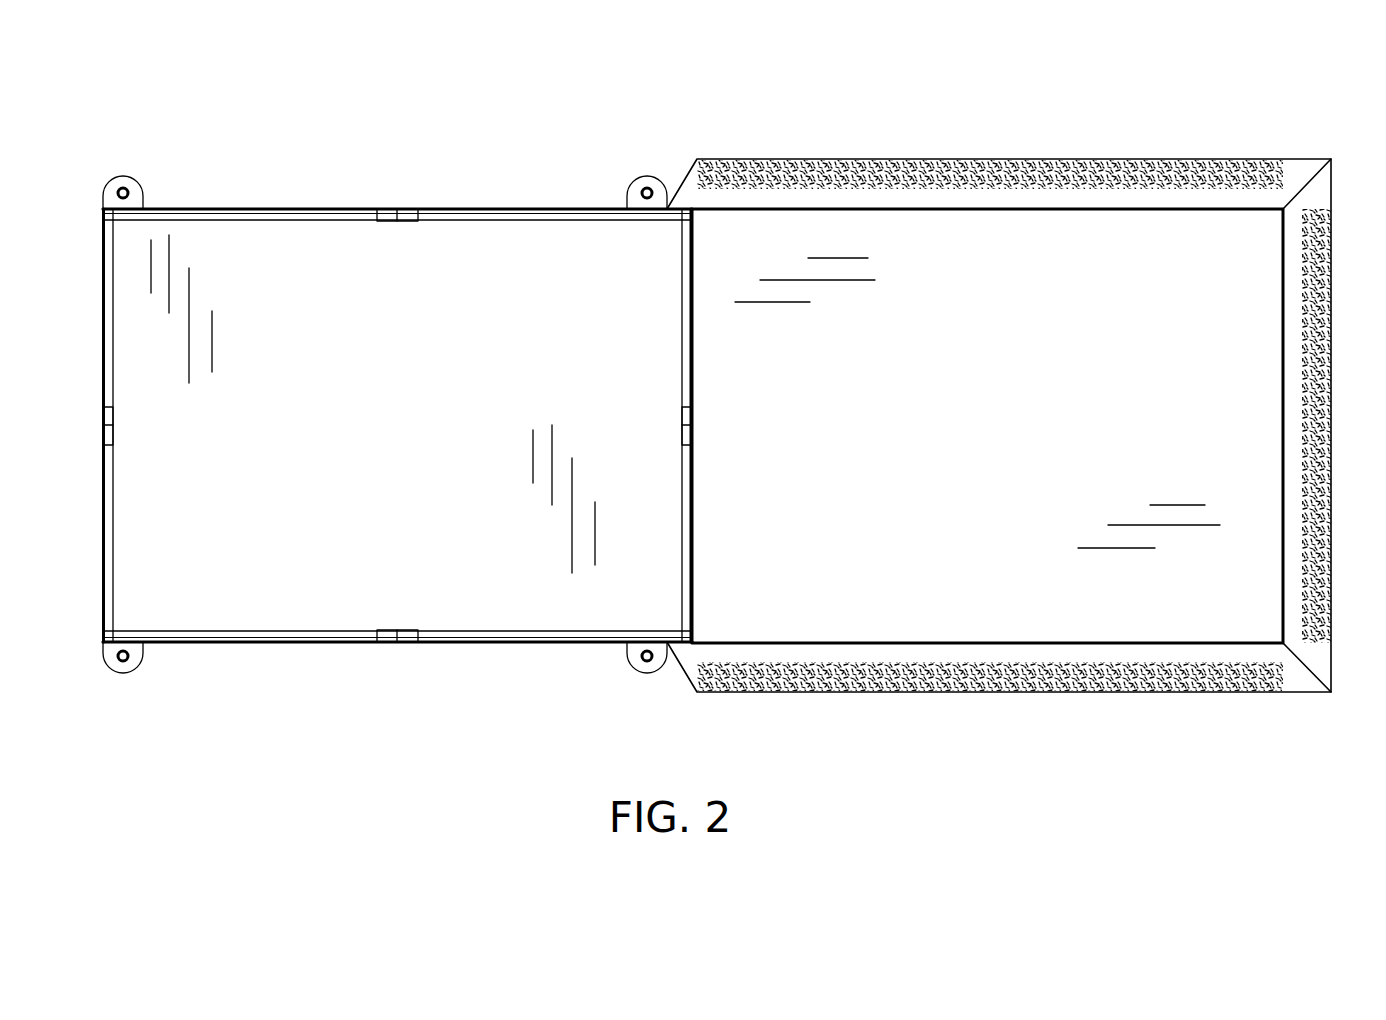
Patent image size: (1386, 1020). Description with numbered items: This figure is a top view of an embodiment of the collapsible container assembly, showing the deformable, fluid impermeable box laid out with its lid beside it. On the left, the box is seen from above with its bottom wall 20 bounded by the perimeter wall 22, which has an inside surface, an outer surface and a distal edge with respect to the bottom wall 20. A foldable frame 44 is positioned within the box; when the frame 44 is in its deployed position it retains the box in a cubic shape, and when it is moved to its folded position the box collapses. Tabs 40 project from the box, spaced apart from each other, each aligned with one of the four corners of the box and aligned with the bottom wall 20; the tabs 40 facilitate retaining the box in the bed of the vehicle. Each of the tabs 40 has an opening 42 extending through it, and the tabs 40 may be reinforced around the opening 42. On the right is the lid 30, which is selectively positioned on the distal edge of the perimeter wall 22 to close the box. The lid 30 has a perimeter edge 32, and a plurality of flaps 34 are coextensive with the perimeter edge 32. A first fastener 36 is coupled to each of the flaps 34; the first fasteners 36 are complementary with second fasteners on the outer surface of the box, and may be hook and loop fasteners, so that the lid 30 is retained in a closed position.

The bottom wall 20 is at (347, 250).
The perimeter wall 22 is at (480, 207).
The frame 44 is at (285, 220).
The tabs 40 is at (128, 178).
The opening 42 is at (123, 688).
The lid 30 is at (1113, 247).
The perimeter edge 32 is at (960, 210).
The flaps 34 is at (873, 160).
The first fasteners 36 is at (775, 176).